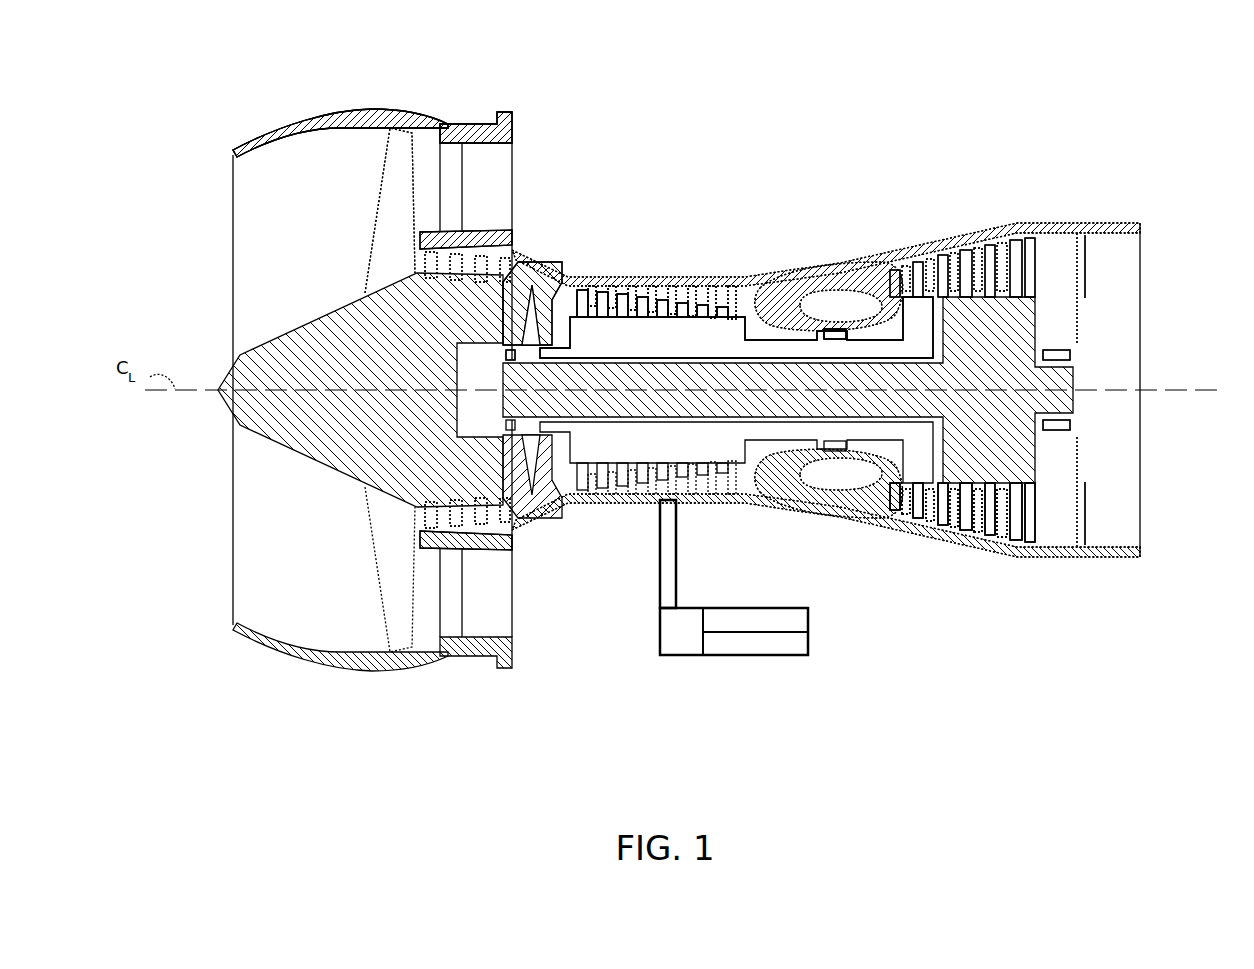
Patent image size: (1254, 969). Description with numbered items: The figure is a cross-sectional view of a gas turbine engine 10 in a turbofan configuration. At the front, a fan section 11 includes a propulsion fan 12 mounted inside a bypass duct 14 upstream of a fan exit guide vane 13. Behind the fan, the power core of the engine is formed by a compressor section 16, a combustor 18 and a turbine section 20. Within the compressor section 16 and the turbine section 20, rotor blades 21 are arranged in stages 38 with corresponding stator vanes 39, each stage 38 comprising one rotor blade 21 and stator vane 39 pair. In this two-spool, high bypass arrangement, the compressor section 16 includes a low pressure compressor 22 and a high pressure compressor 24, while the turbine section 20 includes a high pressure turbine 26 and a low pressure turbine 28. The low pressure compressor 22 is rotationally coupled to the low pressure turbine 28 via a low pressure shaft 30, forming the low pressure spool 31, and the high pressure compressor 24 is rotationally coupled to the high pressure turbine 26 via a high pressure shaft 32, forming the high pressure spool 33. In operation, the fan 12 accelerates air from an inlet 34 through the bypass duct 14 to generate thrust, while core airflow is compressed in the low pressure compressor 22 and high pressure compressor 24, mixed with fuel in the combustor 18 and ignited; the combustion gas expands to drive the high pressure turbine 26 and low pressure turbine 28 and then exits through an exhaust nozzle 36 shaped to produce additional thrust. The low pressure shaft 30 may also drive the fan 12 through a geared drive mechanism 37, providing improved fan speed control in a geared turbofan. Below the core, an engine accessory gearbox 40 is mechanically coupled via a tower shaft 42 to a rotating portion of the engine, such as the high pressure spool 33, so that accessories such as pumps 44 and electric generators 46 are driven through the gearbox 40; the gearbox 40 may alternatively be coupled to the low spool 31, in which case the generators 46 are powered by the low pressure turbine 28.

The gas turbine engine 10 is at (236, 104).
The fan section 11 is at (366, 86).
The propulsion fan 12 is at (386, 220).
The fan exit guide vane 13 is at (455, 132).
The bypass duct 14 is at (500, 192).
The compressor section 16 is at (755, 562).
The combustor 18 is at (832, 298).
The turbine section 20 is at (996, 612).
The rotor blades 21 is at (737, 296).
The low pressure compressor 22 is at (506, 522).
The high pressure compressor 24 is at (618, 508).
The high pressure turbine 26 is at (916, 523).
The low pressure turbine 28 is at (996, 549).
The low pressure shaft 30 is at (786, 490).
The low pressure spool 31 is at (1005, 322).
The high pressure shaft 32 is at (742, 495).
The high pressure spool 33 is at (636, 337).
The inlet 34 is at (246, 226).
The exhaust nozzle 36 is at (1128, 328).
The geared drive mechanism 37 is at (464, 408).
The stages 38 is at (428, 515).
The stator vanes 39 is at (722, 303).
The engine accessory gearbox 40 is at (676, 655).
The tower shaft 42 is at (660, 584).
The pumps 44 is at (800, 606).
The electric generators 46 is at (755, 655).